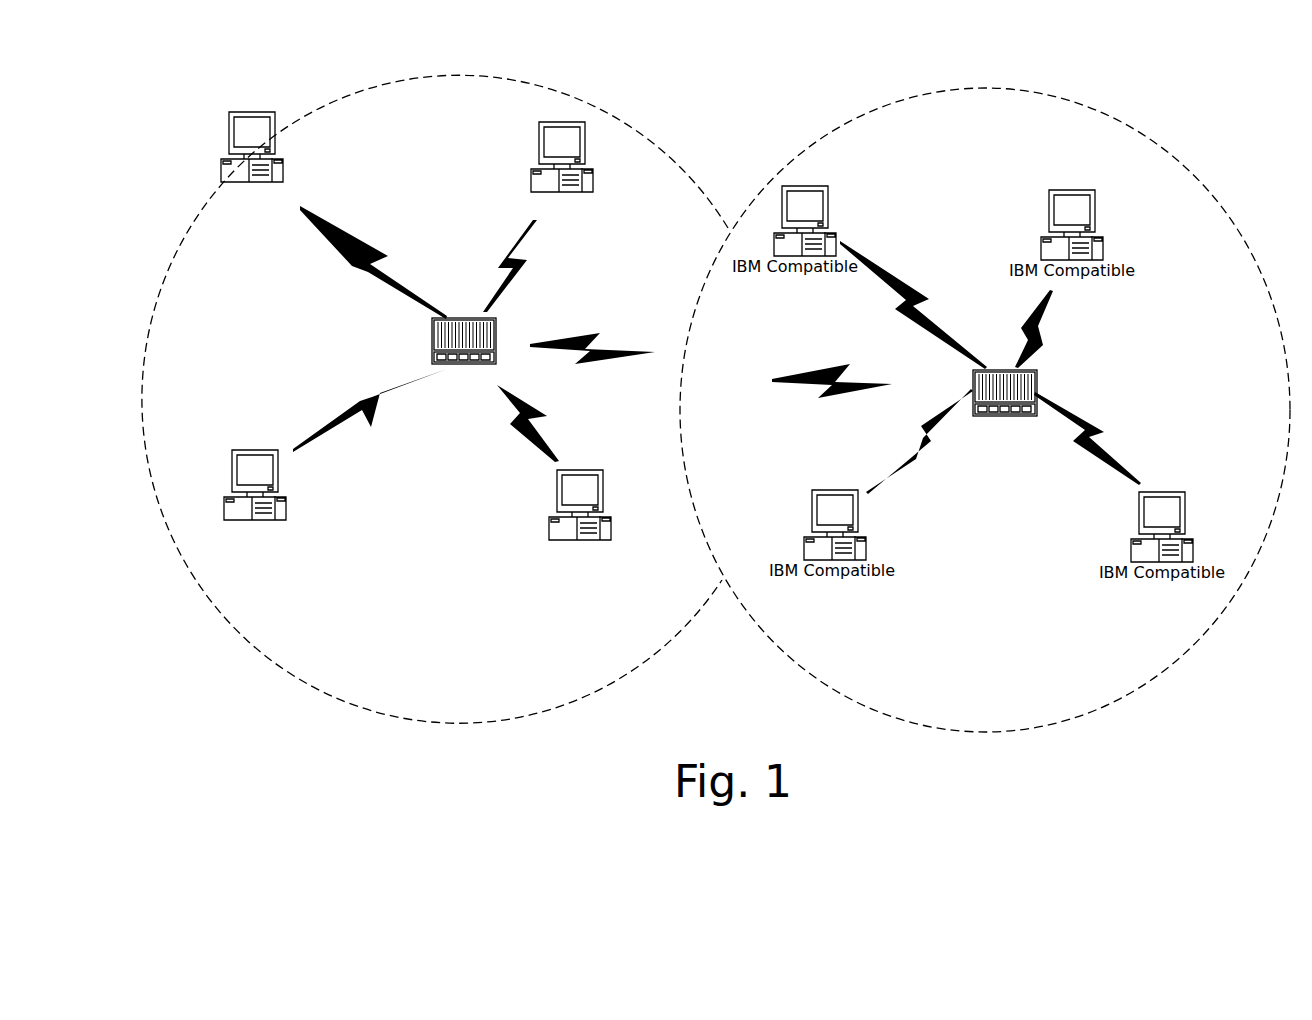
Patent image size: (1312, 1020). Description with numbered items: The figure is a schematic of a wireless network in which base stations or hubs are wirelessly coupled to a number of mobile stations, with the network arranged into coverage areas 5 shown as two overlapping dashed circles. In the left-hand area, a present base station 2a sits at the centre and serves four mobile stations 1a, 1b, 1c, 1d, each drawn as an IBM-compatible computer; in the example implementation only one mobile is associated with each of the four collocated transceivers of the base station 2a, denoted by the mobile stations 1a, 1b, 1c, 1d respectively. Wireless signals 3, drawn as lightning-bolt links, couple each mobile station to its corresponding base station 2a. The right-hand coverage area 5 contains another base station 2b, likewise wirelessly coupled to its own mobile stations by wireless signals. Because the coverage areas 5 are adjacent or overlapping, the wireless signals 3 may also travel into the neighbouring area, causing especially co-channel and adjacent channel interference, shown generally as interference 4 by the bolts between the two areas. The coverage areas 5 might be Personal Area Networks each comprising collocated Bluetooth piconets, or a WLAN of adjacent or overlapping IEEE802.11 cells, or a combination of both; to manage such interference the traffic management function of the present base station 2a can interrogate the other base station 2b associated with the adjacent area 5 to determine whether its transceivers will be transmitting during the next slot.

The mobile station 1a is at (219, 462).
The mobile station 1b is at (620, 460).
The mobile station 1c is at (222, 121).
The mobile station 1d is at (526, 119).
The base station 2a is at (451, 407).
The base station 2b is at (978, 446).
The wireless signals 3 is at (348, 442).
The interference 4 is at (792, 407).
The coverage area 5 is at (792, 672).